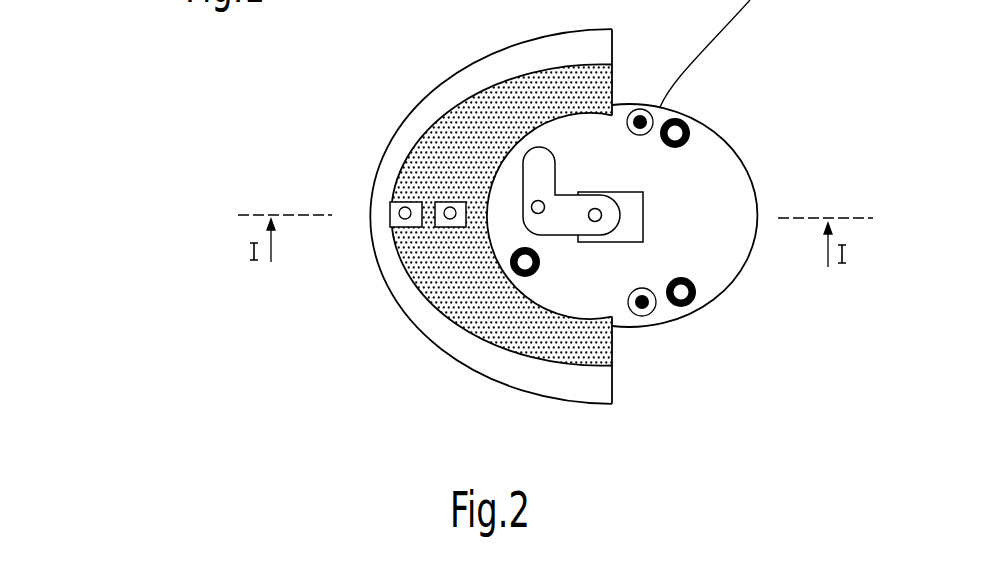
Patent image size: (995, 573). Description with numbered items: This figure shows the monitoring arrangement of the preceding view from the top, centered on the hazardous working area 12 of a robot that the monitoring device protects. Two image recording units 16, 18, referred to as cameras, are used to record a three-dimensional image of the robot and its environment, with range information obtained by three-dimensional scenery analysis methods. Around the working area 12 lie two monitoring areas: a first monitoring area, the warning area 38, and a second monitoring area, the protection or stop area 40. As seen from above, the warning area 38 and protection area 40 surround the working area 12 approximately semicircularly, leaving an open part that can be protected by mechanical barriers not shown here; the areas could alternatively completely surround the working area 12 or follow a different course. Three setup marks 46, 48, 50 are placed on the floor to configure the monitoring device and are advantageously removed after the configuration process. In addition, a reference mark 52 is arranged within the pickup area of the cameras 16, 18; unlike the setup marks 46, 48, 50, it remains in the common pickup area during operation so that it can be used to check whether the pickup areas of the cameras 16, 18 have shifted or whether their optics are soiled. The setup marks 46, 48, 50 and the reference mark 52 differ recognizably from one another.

The working area 12 is at (745, 180).
The image recording unit 16 is at (403, 218).
The image recording unit 18 is at (449, 218).
The warning area 38 is at (390, 138).
The protection area 40 is at (600, 90).
The setup mark 46 is at (697, 300).
The setup mark 48 is at (688, 118).
The setup mark 50 is at (536, 272).
The reference mark 52 is at (647, 312).